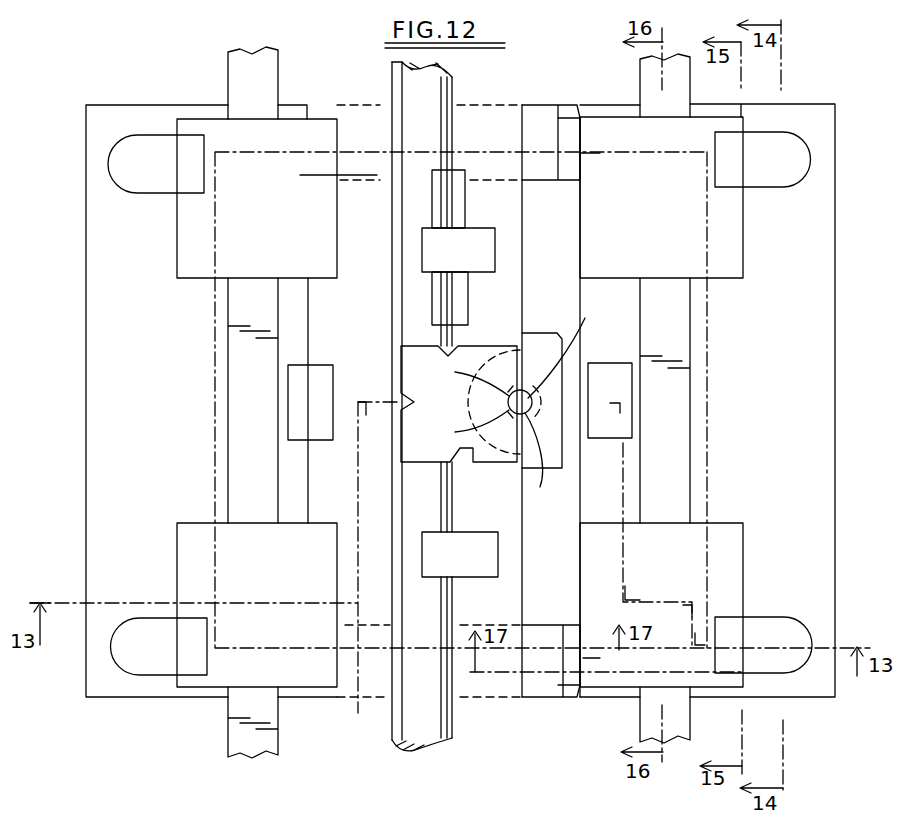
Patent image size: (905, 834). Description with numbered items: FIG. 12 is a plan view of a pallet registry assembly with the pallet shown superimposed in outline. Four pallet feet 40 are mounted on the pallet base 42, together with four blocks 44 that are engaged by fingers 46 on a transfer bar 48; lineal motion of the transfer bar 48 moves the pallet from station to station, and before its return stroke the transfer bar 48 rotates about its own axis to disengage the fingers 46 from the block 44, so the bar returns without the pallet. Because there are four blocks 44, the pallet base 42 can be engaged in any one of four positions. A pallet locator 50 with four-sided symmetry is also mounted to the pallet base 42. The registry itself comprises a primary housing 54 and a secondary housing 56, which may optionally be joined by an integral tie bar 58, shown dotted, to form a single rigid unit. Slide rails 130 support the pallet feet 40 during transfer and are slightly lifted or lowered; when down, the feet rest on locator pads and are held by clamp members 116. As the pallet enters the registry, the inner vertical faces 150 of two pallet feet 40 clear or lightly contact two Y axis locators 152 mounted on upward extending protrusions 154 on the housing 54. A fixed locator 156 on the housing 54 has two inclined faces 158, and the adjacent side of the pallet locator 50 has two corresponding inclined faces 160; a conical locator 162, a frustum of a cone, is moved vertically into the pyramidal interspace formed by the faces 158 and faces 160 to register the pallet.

The pallet feet 40 is at (315, 128).
The pallet base 42 is at (710, 338).
The blocks 44 is at (478, 262).
The fingers 46 is at (453, 213).
The transfer bar 48 is at (445, 93).
The pallet locator 50 is at (490, 467).
The primary housing 54 is at (807, 696).
The secondary housing 56 is at (87, 528).
The tie bar 58 is at (490, 105).
The clamp members 116 is at (177, 175).
The slide rails 130 is at (248, 748).
The inner vertical faces 150 is at (583, 154).
The Y axis locators 152 is at (567, 181).
The protrusions 154 is at (522, 141).
The fixed locator 156 is at (558, 447).
The faces 158 is at (570, 400).
The faces 160 is at (400, 406).
The conical locator 162 is at (523, 391).